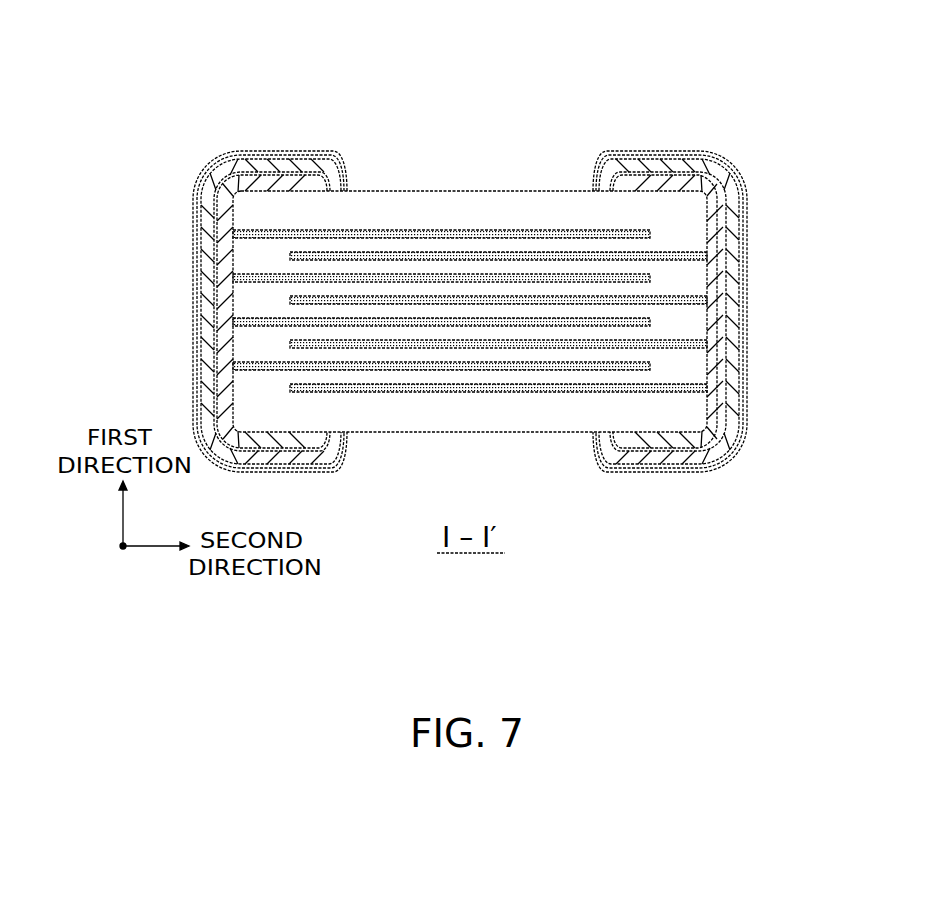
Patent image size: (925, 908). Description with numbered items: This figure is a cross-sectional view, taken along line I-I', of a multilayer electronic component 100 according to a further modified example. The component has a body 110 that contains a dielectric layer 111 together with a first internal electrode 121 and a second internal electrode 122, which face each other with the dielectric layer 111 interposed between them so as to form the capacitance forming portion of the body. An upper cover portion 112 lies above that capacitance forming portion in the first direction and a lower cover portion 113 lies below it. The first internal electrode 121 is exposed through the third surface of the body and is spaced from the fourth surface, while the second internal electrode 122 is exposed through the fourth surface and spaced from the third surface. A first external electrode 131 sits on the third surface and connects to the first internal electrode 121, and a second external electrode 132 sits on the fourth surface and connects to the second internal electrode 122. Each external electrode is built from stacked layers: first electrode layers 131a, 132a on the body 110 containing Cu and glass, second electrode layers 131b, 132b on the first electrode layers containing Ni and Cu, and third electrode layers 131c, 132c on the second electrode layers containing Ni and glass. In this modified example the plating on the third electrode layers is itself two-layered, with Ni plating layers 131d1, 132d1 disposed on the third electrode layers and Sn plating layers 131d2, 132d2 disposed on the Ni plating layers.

The multilayer electronic component 100 is at (500, 51).
The body 110 is at (405, 191).
The dielectric layer 111 is at (352, 267).
The upper cover portion 112 is at (472, 191).
The lower cover portion 113 is at (387, 416).
The first internal electrode 121 is at (548, 230).
The second internal electrode 122 is at (600, 254).
The first external electrode 131 is at (198, 311).
The first electrode layer 131a is at (222, 262).
The second electrode layer 131b is at (220, 304).
The third electrode layer 131c is at (220, 334).
The Ni plating layer 131d1 is at (222, 364).
The Sn plating layer 131d2 is at (112, 258).
The second external electrode 132 is at (753, 311).
The first electrode layer 132a is at (725, 258).
The second electrode layer 132b is at (725, 290).
The third electrode layer 132c is at (725, 322).
The Ni plating layer 132d1 is at (725, 355).
The Sn plating layer 132d2 is at (725, 388).